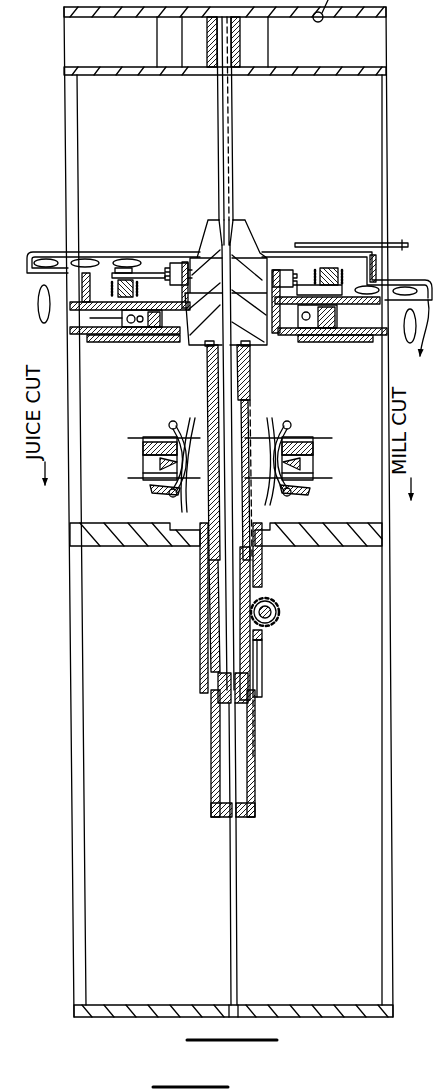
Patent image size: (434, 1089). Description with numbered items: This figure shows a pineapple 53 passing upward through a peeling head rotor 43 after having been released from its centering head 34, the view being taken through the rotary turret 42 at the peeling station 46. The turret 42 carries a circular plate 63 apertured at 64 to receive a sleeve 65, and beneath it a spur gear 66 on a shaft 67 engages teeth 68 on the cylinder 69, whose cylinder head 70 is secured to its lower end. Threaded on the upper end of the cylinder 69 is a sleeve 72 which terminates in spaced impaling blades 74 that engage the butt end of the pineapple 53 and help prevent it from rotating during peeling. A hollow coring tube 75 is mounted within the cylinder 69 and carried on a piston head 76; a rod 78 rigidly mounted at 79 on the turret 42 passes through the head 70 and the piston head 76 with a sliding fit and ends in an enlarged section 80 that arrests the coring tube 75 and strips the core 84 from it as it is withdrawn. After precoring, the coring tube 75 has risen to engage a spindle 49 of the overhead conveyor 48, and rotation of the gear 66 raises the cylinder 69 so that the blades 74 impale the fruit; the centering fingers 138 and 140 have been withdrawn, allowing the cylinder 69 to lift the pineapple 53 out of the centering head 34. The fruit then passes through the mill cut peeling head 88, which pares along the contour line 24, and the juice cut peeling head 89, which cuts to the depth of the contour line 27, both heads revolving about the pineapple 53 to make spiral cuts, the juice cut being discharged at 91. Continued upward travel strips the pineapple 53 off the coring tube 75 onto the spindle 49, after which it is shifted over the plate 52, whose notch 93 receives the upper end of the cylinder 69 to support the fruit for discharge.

The contour line 24 is at (323, 250).
The contour line 27 is at (205, 222).
The centering head 34 is at (311, 431).
The rotary turret 42 is at (312, 1002).
The peeling head rotor 43 is at (88, 319).
The station 46 is at (354, 158).
The conveyor 48 is at (245, 62).
The spindle 49 is at (233, 148).
The slideway 52 is at (397, 243).
The pineapple 53 is at (233, 243).
The circular plate 63 is at (321, 546).
The aperture 64 is at (259, 553).
The sleeve 65 is at (263, 672).
The spur gear 66 is at (282, 612).
The shaft 67 is at (272, 604).
The teeth 68 is at (263, 638).
The cylinder 69 is at (256, 788).
The cylinder head 70 is at (245, 818).
The sleeve 72 is at (249, 378).
The impaling blades 74 is at (205, 356).
The coring tube 75 is at (229, 292).
The piston head 76 is at (216, 688).
The rod 78 is at (239, 932).
The rod mounting 79 is at (239, 1003).
The enlarged section 80 is at (231, 563).
The core 84 is at (240, 257).
The mill cut peeling head 88 is at (281, 275).
The juice cut peeling head 89 is at (194, 262).
The juice cut discharge 91 is at (45, 268).
The notch 93 is at (350, 240).
The centering finger 138 is at (271, 422).
The centering finger 140 is at (194, 418).